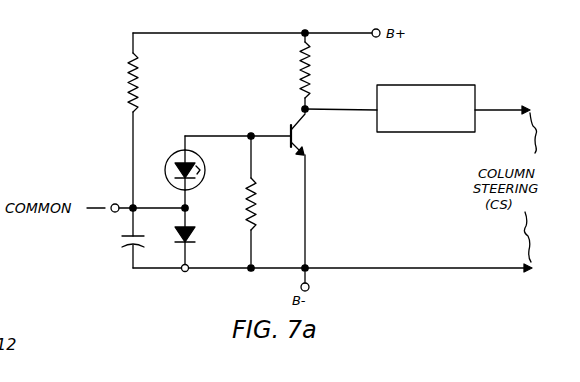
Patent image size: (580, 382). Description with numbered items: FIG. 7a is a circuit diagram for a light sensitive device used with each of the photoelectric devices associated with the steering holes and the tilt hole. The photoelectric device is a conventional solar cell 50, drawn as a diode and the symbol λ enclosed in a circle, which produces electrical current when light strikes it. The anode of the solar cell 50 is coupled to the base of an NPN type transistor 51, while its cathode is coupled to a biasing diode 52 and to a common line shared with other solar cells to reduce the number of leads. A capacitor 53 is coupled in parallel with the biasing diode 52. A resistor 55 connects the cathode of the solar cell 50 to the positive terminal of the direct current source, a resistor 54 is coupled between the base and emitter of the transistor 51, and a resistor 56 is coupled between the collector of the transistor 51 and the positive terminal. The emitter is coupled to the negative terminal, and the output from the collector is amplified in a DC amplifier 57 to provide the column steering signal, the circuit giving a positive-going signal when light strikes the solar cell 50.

The solar cell 50 is at (171, 157).
The NPN type transistor 51 is at (300, 139).
The biasing diode 52 is at (197, 235).
The capacitor 53 is at (112, 240).
The resistor 54 is at (259, 208).
The resistor 55 is at (143, 76).
The resistor 56 is at (312, 72).
The DC amplifier 57 is at (431, 86).